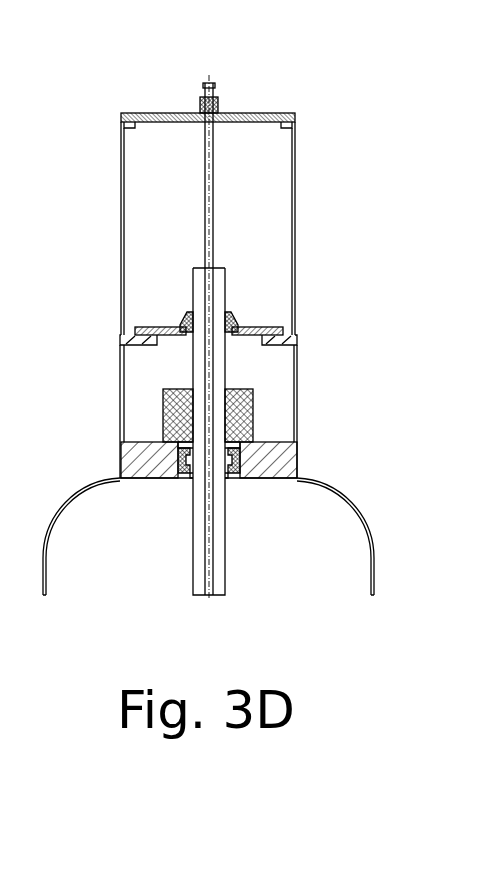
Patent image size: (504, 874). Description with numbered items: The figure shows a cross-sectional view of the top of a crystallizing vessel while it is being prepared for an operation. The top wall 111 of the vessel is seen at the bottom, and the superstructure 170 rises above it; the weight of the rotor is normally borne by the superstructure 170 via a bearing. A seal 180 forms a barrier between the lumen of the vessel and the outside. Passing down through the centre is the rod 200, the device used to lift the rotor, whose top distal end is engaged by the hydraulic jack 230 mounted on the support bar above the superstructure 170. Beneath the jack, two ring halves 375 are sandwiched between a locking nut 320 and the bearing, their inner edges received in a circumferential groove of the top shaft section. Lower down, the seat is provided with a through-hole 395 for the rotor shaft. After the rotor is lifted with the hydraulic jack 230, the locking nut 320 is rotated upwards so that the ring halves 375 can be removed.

The top wall 111 is at (77, 490).
The superstructure 170 is at (298, 226).
The seal 180 is at (242, 421).
The rod 200 is at (205, 172).
The hydraulic jack 230 is at (218, 103).
The locking nut 320 is at (228, 312).
The ring halves 375 is at (186, 318).
The through-hole 395 is at (232, 480).